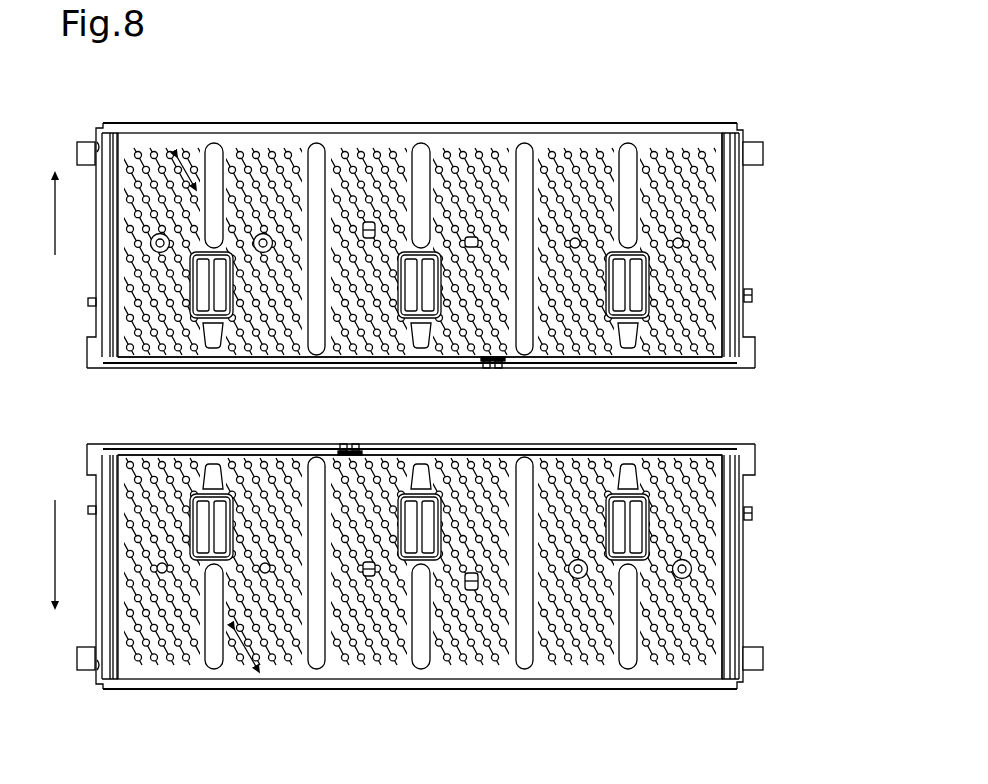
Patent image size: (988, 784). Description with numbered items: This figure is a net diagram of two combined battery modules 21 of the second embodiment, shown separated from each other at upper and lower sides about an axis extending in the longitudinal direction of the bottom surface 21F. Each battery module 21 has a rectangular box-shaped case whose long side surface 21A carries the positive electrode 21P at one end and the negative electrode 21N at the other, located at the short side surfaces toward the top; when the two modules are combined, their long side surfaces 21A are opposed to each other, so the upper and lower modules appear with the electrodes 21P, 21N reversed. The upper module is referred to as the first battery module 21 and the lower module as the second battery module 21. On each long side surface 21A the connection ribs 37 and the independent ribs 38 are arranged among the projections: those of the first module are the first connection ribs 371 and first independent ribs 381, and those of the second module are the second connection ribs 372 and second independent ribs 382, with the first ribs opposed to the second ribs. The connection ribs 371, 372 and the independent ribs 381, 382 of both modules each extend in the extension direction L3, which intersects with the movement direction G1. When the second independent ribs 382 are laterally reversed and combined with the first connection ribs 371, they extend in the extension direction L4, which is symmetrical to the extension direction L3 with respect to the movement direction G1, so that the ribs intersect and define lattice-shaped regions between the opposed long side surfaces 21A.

The battery module 21 is at (738, 124).
The positive electrode 21P is at (82, 140).
The negative electrode 21N is at (753, 142).
The long side surface 21A is at (715, 187).
The bottom surface 21F is at (620, 368).
The connection ribs 37 is at (374, 407).
The first connection ribs 371 is at (570, 158).
The second connection ribs 372 is at (283, 650).
The independent ribs 38 is at (475, 407).
The first independent ribs 381 is at (663, 158).
The second independent ribs 382 is at (176, 660).
The extension direction L3 is at (196, 148).
The extension direction L4 is at (237, 650).
The movement direction G1 is at (41, 390).